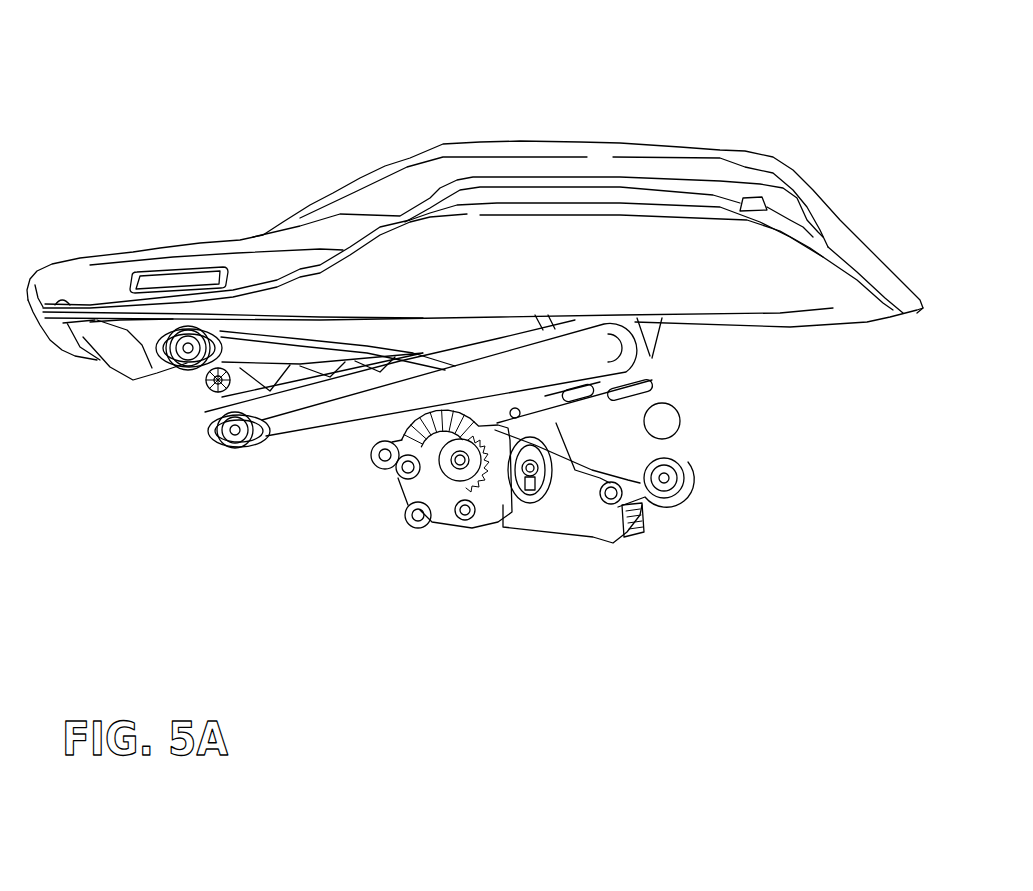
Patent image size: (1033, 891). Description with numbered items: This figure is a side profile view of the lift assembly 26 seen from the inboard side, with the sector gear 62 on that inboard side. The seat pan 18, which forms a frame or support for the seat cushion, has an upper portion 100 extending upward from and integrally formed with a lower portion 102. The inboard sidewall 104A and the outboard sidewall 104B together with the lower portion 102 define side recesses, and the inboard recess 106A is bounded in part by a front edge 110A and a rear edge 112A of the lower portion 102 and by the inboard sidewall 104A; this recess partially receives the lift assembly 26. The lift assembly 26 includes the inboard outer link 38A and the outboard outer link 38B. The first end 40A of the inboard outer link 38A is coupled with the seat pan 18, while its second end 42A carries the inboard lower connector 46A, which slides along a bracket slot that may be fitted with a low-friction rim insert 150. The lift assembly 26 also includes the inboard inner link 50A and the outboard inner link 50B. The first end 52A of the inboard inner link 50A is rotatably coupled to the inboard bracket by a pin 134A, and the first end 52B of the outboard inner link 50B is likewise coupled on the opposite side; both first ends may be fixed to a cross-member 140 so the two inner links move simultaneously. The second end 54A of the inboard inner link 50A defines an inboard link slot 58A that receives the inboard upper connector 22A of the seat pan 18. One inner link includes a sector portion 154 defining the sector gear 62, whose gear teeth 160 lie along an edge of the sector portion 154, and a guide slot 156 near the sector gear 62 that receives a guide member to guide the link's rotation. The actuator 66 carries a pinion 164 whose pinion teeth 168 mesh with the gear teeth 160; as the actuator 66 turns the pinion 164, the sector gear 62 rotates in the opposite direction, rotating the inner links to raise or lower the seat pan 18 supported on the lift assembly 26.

The lift assembly 26 is at (212, 97).
The seat pan 18 is at (597, 230).
The inboard sidewall 104A is at (443, 230).
The inboard recess 106A is at (403, 334).
The outboard sidewall 104B is at (700, 153).
The upper portion 100 is at (747, 257).
The front edge 110A is at (663, 318).
The lower portion 102 is at (667, 333).
The rear edge 112A is at (125, 368).
The second end 54A is at (170, 327).
The inboard upper connector 22A is at (188, 343).
The inboard link slot 58A is at (212, 331).
The low-friction rim insert 150 is at (165, 378).
The second end 42A is at (185, 397).
The outboard outer link 38B is at (277, 375).
The inboard lower connector 46A is at (237, 437).
The inboard outer link 38A is at (302, 415).
The first end 40A is at (610, 350).
The outboard inner link 50B is at (617, 393).
The first end 52B is at (667, 403).
The cross-member 140 is at (657, 423).
The pin 134A is at (663, 478).
The first end 52A is at (653, 493).
The pinion 164 is at (427, 472).
The pinion teeth 168 is at (470, 483).
The gear teeth 160 is at (497, 517).
The guide slot 156 is at (535, 490).
The inboard inner link 50A is at (556, 425).
The sector portion 154 is at (573, 503).
The sector gear 62 is at (585, 488).
The actuator 66 is at (603, 523).